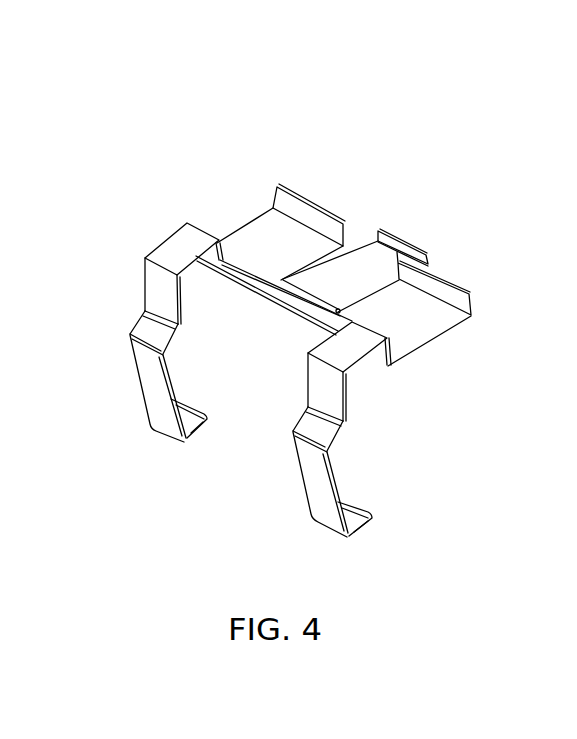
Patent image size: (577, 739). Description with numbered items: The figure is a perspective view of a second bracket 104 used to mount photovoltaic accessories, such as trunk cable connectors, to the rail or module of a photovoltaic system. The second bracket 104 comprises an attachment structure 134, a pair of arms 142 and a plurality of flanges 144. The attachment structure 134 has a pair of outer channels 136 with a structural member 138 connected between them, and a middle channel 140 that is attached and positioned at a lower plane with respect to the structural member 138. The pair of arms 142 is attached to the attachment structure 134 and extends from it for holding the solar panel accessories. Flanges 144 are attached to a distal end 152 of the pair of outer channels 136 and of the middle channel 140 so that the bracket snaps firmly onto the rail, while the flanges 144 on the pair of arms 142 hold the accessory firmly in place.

The second bracket 104 is at (337, 119).
The attachment structure 134 is at (224, 233).
The outer channels 136 is at (245, 225).
The structural member 138 is at (297, 292).
The middle channel 140 is at (363, 267).
The arms 142 is at (153, 398).
The flanges 144 is at (311, 217).
The distal end 152 is at (271, 206).